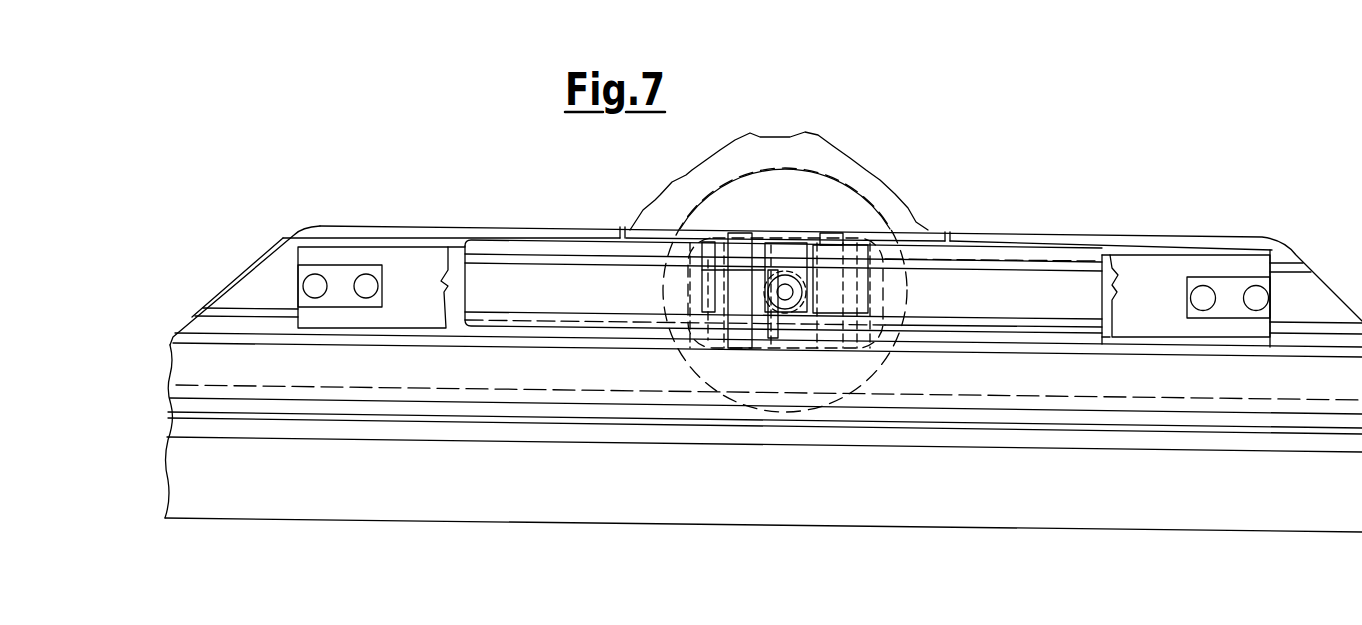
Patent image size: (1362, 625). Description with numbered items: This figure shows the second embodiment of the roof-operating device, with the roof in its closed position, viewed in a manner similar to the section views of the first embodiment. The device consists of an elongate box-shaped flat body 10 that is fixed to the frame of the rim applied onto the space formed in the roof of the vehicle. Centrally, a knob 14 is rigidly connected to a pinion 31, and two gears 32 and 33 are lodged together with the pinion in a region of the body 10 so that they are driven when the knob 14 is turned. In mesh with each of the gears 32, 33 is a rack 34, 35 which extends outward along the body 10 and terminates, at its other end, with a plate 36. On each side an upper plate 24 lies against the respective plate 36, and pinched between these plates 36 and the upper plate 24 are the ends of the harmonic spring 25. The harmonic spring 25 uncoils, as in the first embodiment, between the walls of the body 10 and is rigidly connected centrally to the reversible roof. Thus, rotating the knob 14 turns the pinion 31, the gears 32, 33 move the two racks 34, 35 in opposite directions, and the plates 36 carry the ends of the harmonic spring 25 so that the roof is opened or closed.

The body 10 is at (1053, 237).
The knob 14 is at (848, 162).
The upper plate 24 is at (343, 276).
The harmonic spring 25 is at (410, 263).
The pinion 31 is at (783, 270).
The gear 32 is at (850, 288).
The gear 33 is at (719, 280).
The rack 34 is at (592, 322).
The rack 35 is at (930, 258).
The plate 36 is at (451, 318).